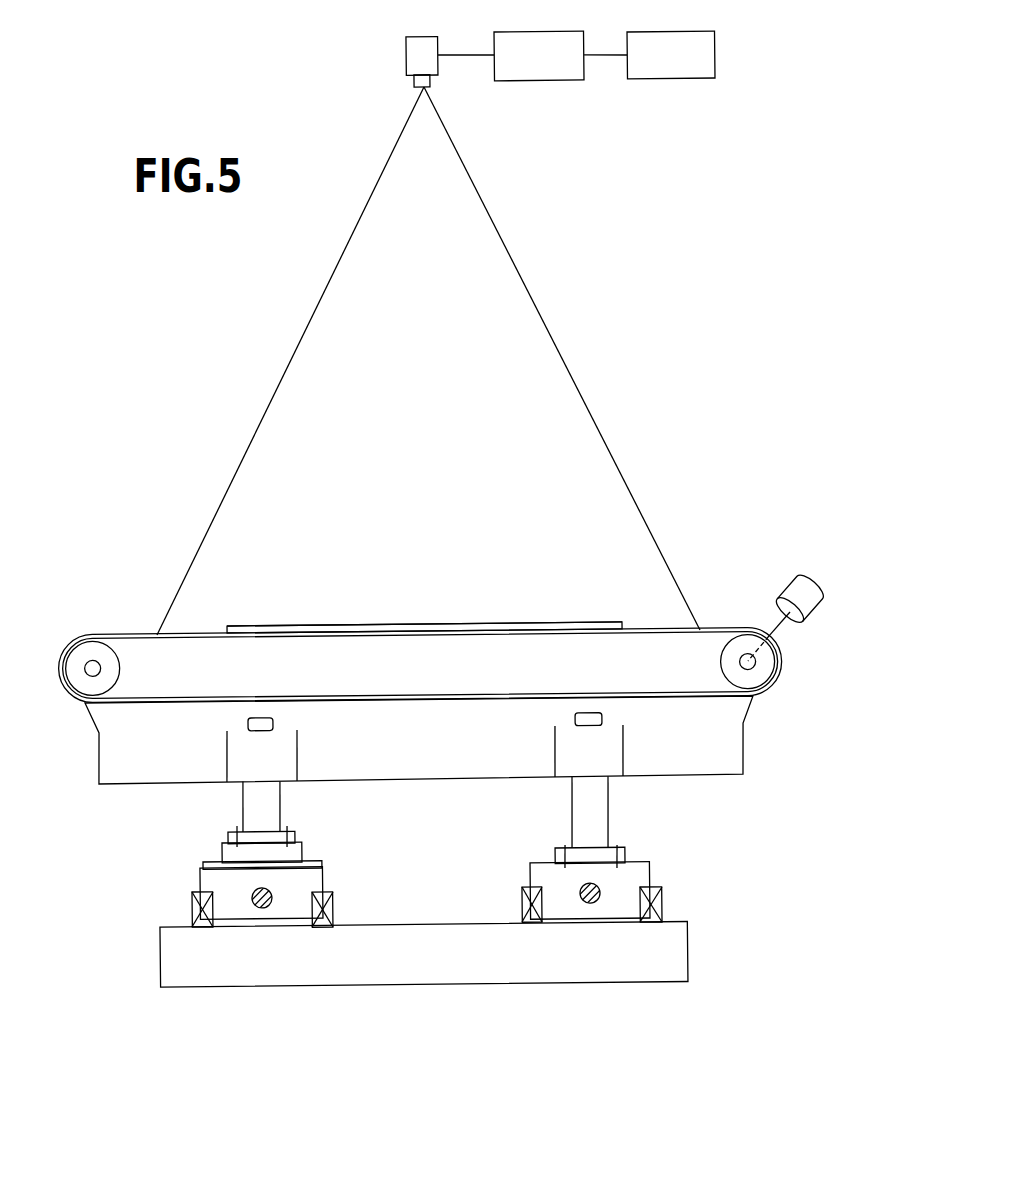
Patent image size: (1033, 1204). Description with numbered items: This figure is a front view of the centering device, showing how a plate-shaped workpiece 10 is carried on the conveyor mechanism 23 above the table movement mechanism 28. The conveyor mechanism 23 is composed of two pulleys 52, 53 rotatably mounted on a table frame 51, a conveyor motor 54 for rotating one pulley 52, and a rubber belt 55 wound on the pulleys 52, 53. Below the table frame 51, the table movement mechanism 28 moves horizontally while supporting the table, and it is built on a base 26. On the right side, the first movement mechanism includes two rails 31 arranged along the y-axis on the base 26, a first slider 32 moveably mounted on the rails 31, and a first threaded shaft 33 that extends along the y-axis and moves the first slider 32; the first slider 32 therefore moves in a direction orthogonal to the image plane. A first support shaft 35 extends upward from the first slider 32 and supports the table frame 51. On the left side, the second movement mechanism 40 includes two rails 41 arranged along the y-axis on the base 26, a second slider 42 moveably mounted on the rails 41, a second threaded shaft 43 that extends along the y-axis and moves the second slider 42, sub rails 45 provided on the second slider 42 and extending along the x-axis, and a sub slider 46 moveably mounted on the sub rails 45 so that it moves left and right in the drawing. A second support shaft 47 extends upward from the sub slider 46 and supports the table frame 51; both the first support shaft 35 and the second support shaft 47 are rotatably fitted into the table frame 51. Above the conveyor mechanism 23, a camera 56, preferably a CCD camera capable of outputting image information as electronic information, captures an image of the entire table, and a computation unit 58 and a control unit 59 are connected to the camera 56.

The plate-shaped workpiece 10 is at (378, 624).
The conveyor mechanism 23 is at (192, 630).
The base 26 is at (452, 967).
The table movement mechanism 28 is at (217, 884).
The rails 31 is at (531, 922).
The first slider 32 is at (638, 874).
The first threaded shaft 33 is at (590, 904).
The first support shaft 35 is at (592, 746).
The second movement mechanism 40 is at (663, 879).
The rails 41 is at (203, 924).
The second slider 42 is at (198, 877).
The second threaded shaft 43 is at (260, 905).
The sub rails 45 is at (320, 856).
The sub slider 46 is at (302, 843).
The second support shaft 47 is at (254, 747).
The table frame 51 is at (118, 746).
The pulley 52 is at (768, 678).
The pulley 53 is at (92, 646).
The conveyor motor 54 is at (787, 595).
The rubber belt 55 is at (517, 626).
The camera 56 is at (411, 49).
The computation unit 58 is at (546, 80).
The control unit 59 is at (678, 80).